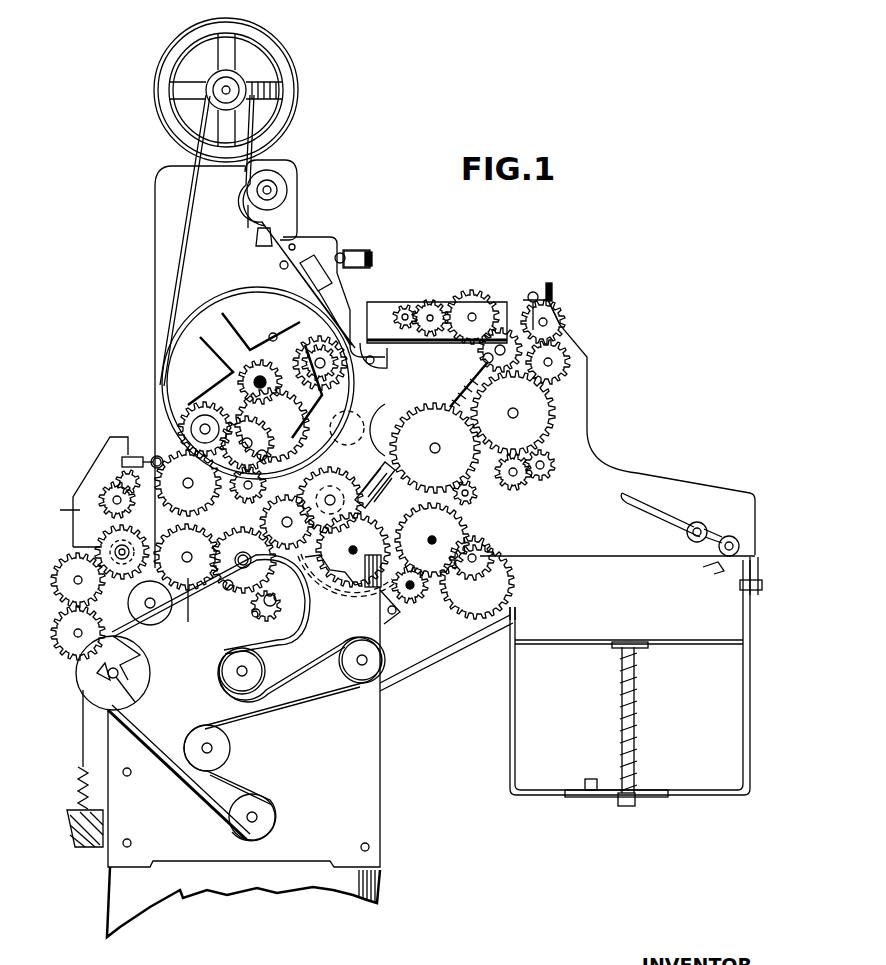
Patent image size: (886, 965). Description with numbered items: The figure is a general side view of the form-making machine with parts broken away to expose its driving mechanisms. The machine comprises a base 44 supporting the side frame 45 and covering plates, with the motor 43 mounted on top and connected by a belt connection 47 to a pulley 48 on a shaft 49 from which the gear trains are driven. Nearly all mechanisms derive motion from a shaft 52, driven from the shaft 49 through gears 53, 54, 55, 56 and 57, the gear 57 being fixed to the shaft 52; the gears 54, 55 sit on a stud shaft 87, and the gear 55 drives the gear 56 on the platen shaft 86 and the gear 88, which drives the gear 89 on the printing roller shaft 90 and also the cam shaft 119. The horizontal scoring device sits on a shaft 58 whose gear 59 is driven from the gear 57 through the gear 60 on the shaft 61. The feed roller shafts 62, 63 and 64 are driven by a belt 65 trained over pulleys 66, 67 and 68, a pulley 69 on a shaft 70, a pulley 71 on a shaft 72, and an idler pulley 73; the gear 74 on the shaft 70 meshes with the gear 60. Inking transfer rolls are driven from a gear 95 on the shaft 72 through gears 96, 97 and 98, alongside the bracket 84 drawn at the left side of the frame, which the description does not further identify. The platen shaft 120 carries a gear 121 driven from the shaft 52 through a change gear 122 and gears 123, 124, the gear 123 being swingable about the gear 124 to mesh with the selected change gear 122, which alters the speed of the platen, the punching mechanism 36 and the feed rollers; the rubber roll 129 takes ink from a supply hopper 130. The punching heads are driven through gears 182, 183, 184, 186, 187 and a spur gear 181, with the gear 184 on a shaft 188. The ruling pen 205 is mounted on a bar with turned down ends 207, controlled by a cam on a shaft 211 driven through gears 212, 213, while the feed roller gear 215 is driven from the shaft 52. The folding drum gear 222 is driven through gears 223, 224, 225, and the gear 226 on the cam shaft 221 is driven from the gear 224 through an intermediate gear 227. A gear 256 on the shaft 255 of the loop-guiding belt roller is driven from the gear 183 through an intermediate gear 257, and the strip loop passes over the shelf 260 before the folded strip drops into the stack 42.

The punching mechanism 36 is at (394, 299).
The stack 42 is at (755, 662).
The motor 43 is at (290, 60).
The base 44 is at (115, 906).
The side frame 45 is at (365, 777).
The belt connection 47 is at (178, 262).
The pulley 48 is at (228, 298).
The shaft 49 is at (250, 374).
The shaft 52 is at (284, 522).
The gear 53 is at (259, 370).
The gear 54 is at (275, 425).
The gear 55 is at (262, 458).
The gear 56 is at (237, 546).
The gear 57 is at (267, 592).
The shaft 58 is at (185, 553).
The gear 59 is at (188, 622).
The gear 60 is at (226, 590).
The shaft 61 is at (242, 570).
The shaft 62 is at (212, 752).
The shaft 63 is at (366, 660).
The shaft 64 is at (246, 670).
The belt 65 is at (298, 705).
The pulley 66 is at (220, 745).
The pulley 67 is at (348, 670).
The pulley 68 is at (230, 678).
The pulley 69 is at (262, 632).
The shaft 70 is at (276, 605).
The pulley 71 is at (140, 680).
The shaft 72 is at (128, 698).
The idler pulley 73 is at (262, 828).
The gear 74 is at (254, 616).
The bracket 84 is at (73, 512).
The shaft 86 is at (248, 485).
The stud shaft 87 is at (248, 443).
The gear 88 is at (192, 428).
The gear 89 is at (177, 467).
The printing roller shaft 90 is at (188, 483).
The gear 95 is at (95, 676).
The gear 96 is at (70, 640).
The gear 97 is at (70, 590).
The gear 98 is at (100, 546).
The shaft 119 is at (206, 426).
The shaft 120 is at (320, 363).
The gear 121 is at (308, 362).
The change gear 122 is at (330, 500).
The gear 123 is at (345, 518).
The gear 124 is at (380, 418).
The rubber roll 129 is at (340, 253).
The supply hopper 130 is at (362, 252).
The spur gear 181 is at (408, 310).
The gear 182 is at (425, 425).
The gear 183 is at (545, 403).
The gear 184 is at (486, 357).
The gear 186 is at (476, 294).
The gear 187 is at (432, 302).
The shaft 188 is at (501, 345).
The ruling pen 205 is at (549, 298).
The turned down end 207 is at (533, 292).
The shaft 211 is at (548, 322).
The gear 212 is at (556, 361).
The gear 213 is at (560, 326).
The gear 215 is at (478, 494).
The shaft 221 is at (472, 562).
The gear 222 is at (518, 572).
The gear 223 is at (316, 592).
The gear 224 is at (363, 590).
The gear 225 is at (418, 598).
The gear 226 is at (480, 566).
The intermediate gear 227 is at (432, 540).
The shaft 255 is at (542, 463).
The gear 256 is at (556, 468).
The intermediate gear 257 is at (523, 480).
The shelf 260 is at (716, 574).